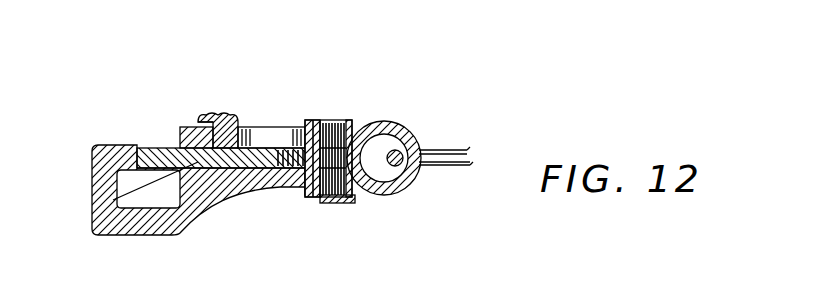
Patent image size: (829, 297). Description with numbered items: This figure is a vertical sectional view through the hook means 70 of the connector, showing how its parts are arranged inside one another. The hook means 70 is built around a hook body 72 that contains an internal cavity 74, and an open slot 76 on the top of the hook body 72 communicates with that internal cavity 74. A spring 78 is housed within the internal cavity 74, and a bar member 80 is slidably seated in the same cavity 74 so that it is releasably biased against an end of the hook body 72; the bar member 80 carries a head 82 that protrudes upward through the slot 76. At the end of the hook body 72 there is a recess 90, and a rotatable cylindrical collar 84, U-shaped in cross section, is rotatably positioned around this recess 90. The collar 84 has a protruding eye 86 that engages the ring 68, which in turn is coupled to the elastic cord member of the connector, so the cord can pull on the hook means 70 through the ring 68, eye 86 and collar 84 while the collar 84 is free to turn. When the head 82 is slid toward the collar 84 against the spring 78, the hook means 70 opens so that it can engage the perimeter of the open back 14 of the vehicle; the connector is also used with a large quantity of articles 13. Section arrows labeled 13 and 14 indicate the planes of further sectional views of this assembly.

The articles 13 is at (220, 102).
The open back 14 is at (332, 115).
The ring 68 is at (450, 148).
The hook means 70 is at (186, 96).
The hook body 72 is at (333, 118).
The internal cavity 74 is at (290, 184).
The open slot 76 is at (267, 138).
The spring 78 is at (322, 203).
The bar member 80 is at (93, 223).
The head 82 is at (237, 122).
The rotatable cylindrical collar 84 is at (353, 120).
The protruding eye 86 is at (387, 130).
The recess 90 is at (325, 120).